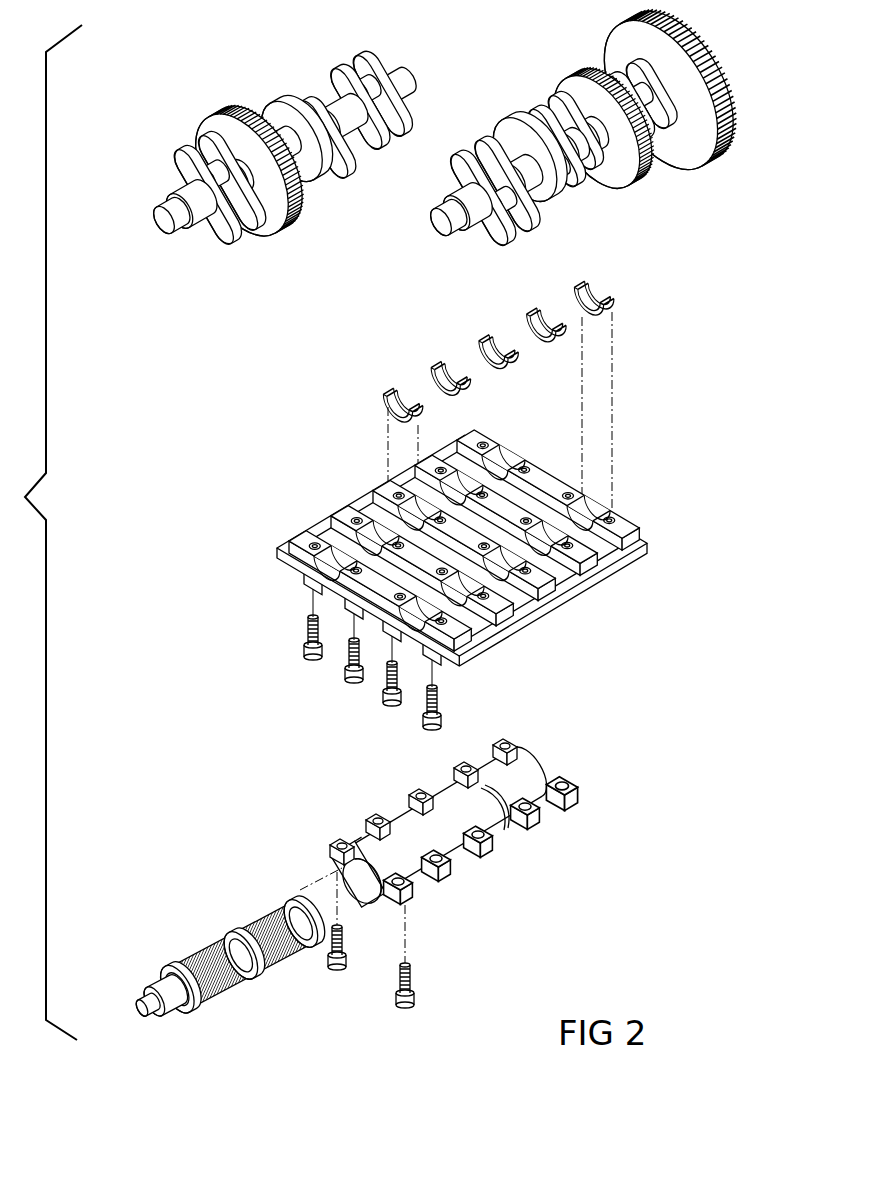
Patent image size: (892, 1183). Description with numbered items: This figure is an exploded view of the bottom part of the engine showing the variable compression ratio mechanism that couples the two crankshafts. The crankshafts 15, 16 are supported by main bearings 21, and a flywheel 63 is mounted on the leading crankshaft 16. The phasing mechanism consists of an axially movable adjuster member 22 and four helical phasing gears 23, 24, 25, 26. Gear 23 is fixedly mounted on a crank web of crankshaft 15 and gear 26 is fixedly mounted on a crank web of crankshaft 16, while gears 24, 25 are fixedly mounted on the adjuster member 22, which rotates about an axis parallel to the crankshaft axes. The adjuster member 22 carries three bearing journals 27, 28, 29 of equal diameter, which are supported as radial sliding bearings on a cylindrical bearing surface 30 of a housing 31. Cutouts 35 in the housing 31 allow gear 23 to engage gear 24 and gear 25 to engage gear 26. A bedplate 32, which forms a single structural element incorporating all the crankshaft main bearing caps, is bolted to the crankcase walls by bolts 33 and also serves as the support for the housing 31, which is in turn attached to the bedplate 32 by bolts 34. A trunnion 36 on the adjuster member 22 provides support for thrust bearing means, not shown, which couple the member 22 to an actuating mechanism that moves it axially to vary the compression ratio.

The crankshaft 15 is at (284, 144).
The crankshaft 16 is at (576, 148).
The main bearings 21 is at (586, 300).
The axially movable adjuster member 22 is at (203, 951).
The helical phasing gear 23 is at (249, 171).
The helical phasing gear 24 is at (183, 965).
The helical phasing gear 25 is at (280, 953).
The helical phasing gear 26 is at (620, 70).
The bearing journal 27 is at (187, 1012).
The bearing journal 28 is at (233, 937).
The bearing journal 29 is at (300, 900).
The cylindrical bearing surface 30 is at (365, 898).
The housing 31 is at (454, 866).
The bedplate 32 is at (603, 568).
The bolts 33 is at (303, 634).
The bolts 34 is at (414, 985).
The cutouts 35 is at (413, 822).
The trunnion 36 is at (150, 988).
The flywheel 63 is at (670, 94).